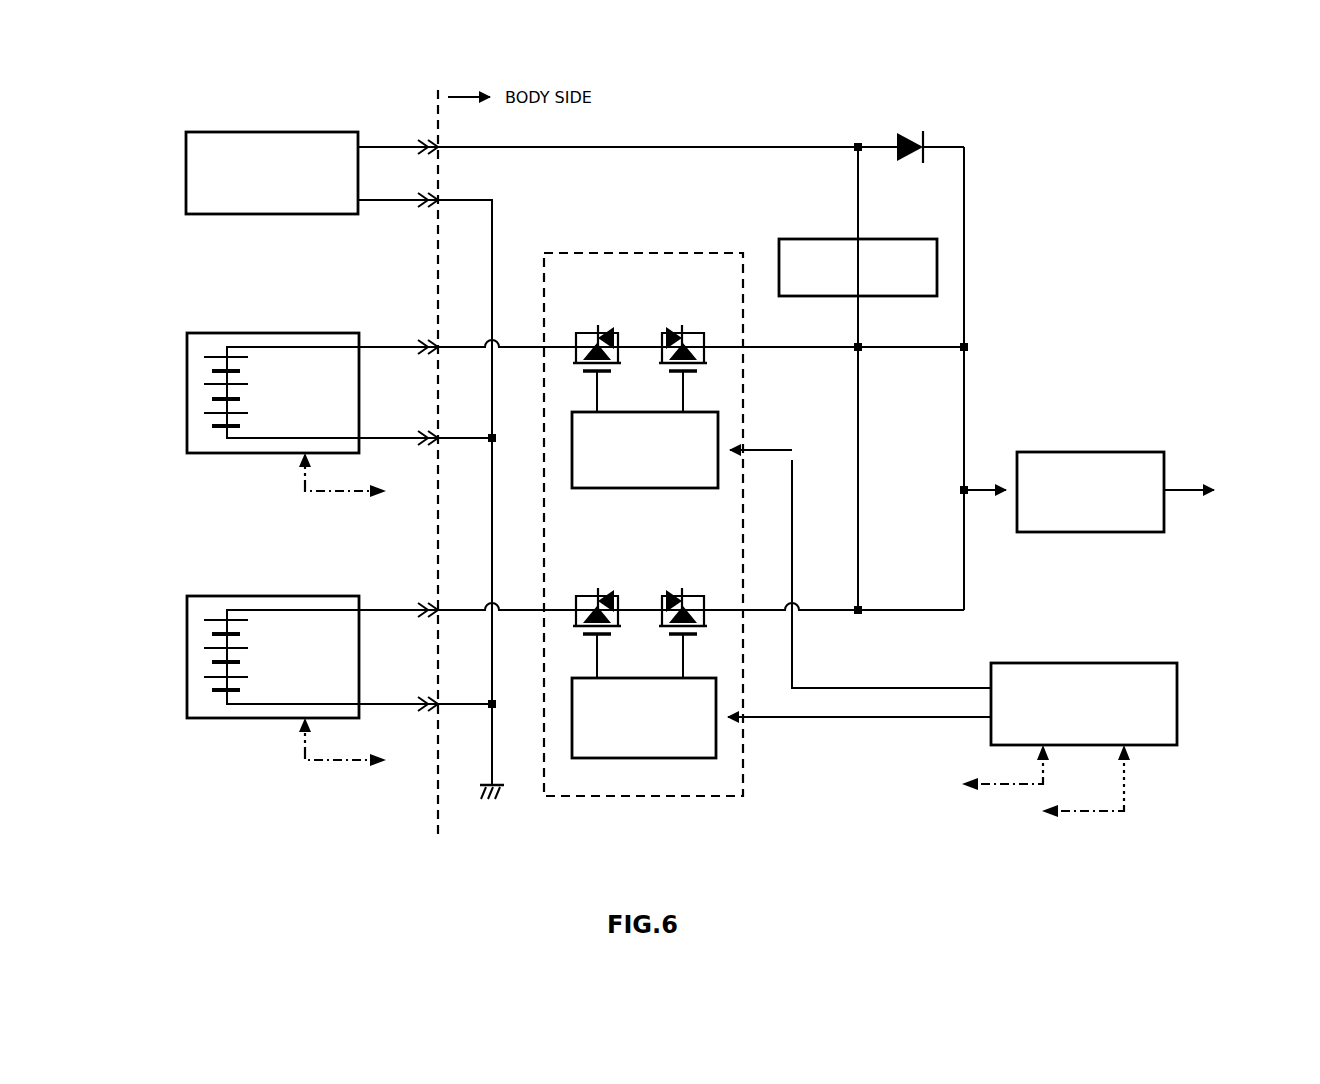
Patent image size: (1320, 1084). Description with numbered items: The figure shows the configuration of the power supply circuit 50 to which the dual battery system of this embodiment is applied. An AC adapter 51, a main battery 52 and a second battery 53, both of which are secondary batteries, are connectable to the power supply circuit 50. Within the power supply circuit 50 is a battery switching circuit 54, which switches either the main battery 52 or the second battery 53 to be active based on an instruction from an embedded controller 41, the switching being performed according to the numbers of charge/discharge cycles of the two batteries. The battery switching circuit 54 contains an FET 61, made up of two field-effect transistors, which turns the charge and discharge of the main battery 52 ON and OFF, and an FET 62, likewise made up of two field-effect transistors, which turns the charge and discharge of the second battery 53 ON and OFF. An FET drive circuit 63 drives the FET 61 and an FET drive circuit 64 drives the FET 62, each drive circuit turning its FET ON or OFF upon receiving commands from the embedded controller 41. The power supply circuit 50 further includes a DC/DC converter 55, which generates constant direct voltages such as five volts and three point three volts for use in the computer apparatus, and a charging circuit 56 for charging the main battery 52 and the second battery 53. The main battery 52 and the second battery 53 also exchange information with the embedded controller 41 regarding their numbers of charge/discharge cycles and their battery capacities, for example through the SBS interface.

The power supply circuit 50 is at (1043, 147).
The AC adapter 51 is at (282, 133).
The main battery 52 is at (324, 333).
The second battery 53 is at (344, 597).
The battery switching circuit 54 is at (654, 253).
The DC/DC converter 55 is at (1115, 452).
The charging circuit 56 is at (883, 239).
The FET 61 is at (678, 268).
The FET 62 is at (634, 556).
The FET drive circuit 63 is at (720, 436).
The FET drive circuit 64 is at (718, 738).
The embedded controller 41 is at (1123, 663).